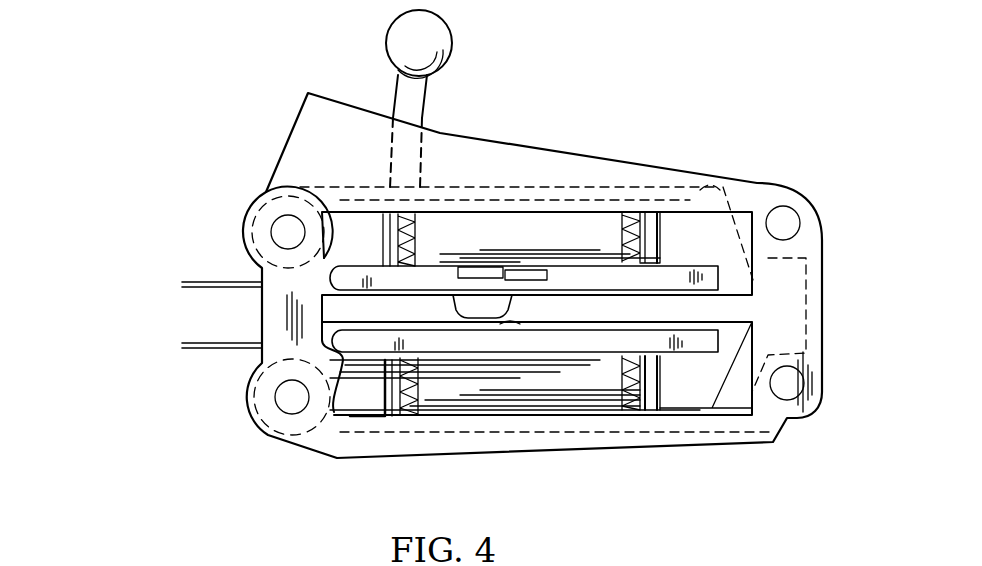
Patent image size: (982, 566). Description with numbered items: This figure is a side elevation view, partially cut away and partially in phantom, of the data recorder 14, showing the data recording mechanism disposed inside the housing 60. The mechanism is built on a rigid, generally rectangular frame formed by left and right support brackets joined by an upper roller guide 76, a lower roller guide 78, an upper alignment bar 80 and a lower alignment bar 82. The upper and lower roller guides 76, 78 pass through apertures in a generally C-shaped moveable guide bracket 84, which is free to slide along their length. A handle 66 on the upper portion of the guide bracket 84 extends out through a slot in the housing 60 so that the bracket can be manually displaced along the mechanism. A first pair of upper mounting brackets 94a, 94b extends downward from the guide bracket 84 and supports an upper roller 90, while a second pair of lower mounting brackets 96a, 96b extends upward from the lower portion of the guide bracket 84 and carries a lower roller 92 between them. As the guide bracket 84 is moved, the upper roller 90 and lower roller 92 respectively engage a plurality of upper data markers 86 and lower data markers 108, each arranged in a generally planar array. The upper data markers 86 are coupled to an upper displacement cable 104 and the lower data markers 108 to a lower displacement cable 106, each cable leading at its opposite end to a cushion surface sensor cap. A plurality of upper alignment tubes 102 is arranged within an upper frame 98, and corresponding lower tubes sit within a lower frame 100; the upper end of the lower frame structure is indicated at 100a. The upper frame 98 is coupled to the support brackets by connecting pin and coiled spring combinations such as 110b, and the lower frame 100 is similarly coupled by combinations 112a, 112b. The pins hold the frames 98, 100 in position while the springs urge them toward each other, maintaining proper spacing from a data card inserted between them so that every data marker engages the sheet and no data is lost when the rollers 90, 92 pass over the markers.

The data recorder 14 is at (668, 124).
The housing 60 is at (757, 183).
The handle 66 is at (432, 32).
The upper roller guide 76 is at (284, 232).
The lower roller guide 78 is at (285, 398).
The upper alignment bar 80 is at (786, 225).
The lower alignment bar 82 is at (793, 385).
The moveable guide bracket 84 is at (310, 188).
The upper data markers 86 is at (473, 268).
The upper roller 90 is at (572, 232).
The lower roller 92 is at (608, 382).
The upper mounting bracket 94a is at (383, 248).
The upper mounting bracket 94b is at (660, 233).
The lower mounting bracket 96a is at (383, 385).
The lower mounting bracket 96b is at (667, 383).
The upper frame 98 is at (595, 270).
The lower frame 100 is at (568, 345).
The cord upper end 100a is at (400, 205).
The upper alignment tubes 102 is at (527, 266).
The upper displacement cable 104 is at (505, 270).
The lower displacement cable 106 is at (208, 350).
The lower data markers 108 is at (512, 328).
The connecting pin and coiled spring combination 110b is at (648, 192).
The connecting pin and coiled spring combination 112a is at (387, 422).
The connecting pin and coiled spring combination 112b is at (660, 408).